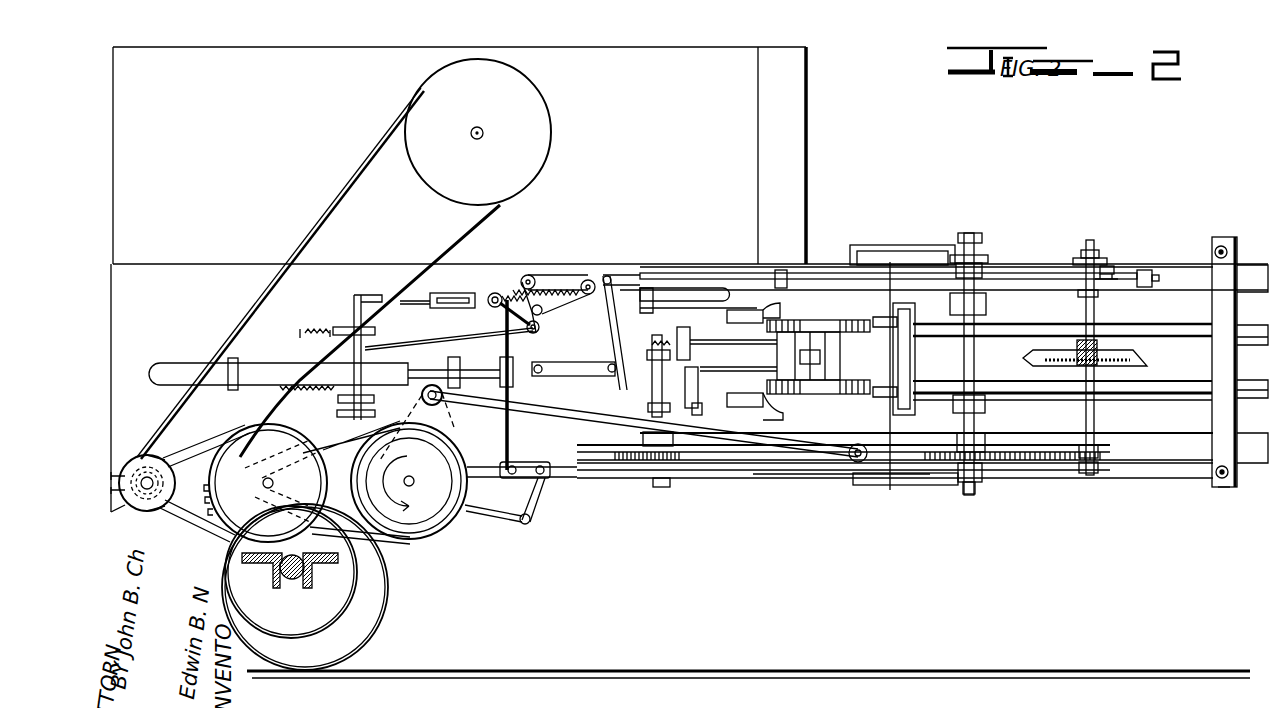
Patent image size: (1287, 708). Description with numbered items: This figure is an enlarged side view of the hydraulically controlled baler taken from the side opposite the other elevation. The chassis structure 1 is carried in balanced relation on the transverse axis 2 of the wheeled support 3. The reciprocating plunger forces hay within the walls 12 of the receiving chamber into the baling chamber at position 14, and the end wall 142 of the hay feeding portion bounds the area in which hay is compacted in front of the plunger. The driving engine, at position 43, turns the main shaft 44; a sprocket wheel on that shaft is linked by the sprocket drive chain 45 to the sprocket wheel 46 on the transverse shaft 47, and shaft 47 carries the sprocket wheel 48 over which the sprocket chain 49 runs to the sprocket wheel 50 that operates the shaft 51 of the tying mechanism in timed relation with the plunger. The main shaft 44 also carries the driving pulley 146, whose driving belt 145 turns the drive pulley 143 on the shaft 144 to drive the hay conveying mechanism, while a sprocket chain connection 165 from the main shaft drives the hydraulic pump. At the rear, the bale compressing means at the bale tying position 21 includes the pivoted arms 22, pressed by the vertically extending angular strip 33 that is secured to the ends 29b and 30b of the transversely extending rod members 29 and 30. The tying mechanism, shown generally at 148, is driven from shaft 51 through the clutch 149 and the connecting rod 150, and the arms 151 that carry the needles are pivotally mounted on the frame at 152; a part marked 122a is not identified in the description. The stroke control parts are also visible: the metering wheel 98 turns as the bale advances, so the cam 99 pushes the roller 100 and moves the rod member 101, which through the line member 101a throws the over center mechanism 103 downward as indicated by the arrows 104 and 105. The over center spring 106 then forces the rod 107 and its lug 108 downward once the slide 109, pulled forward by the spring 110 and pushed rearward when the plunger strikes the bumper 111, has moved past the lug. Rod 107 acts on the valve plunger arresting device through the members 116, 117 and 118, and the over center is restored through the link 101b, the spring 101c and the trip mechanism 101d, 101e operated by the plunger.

The chassis structure 1 is at (329, 568).
The transverse axis 2 is at (292, 584).
The wheeled support 3 is at (361, 628).
The walls 12 is at (1188, 282).
The baling chamber 14 is at (515, 270).
The bale tying position 21 is at (1043, 290).
The arms 22 is at (1190, 340).
The rod member 29 is at (1228, 243).
The end of rod member 29b is at (1216, 245).
The rod member 30 is at (1216, 475).
The end of rod member 30b is at (1223, 479).
The angular strip 33 is at (1223, 377).
The driving engine position 43 is at (148, 300).
The main shaft 44 is at (146, 494).
The sprocket drive chain 45 is at (201, 523).
The sprocket wheel 46 is at (242, 448).
The transverse shaft 47 is at (257, 489).
The sprocket wheel 48 is at (265, 483).
The sprocket chain 49 is at (384, 570).
The sprocket wheel 50 is at (456, 513).
The shaft of the tying mechanism 51 is at (418, 490).
The metering wheel 98 is at (1036, 374).
The cam 99 is at (1091, 277).
The roller 100 is at (1109, 277).
The rod member 101 is at (815, 275).
The line member 101a is at (557, 273).
The link 101b is at (458, 333).
The spring 101c is at (331, 334).
The trip mechanism 101d is at (368, 292).
The trip mechanism 101e is at (447, 296).
The over center mechanism 103 is at (544, 272).
The arrow 104 is at (484, 303).
The arrow 105 is at (503, 450).
The over center spring 106 is at (574, 300).
The rod 107 is at (510, 346).
The lug 108 is at (549, 363).
The slide 109 is at (400, 378).
The spring 110 is at (277, 398).
The bumper 111 is at (238, 357).
The member 116 is at (527, 462).
The member 117 is at (534, 506).
The member 118 is at (508, 521).
The lever 122a is at (728, 318).
The end wall of hay conveying chamber 142 is at (809, 167).
The drive pulley 143 is at (526, 106).
The shaft 144 is at (476, 141).
The driving belt 145 is at (228, 335).
The driving pulley 146 is at (172, 468).
The tying mechanism 148 is at (851, 290).
The clutch 149 is at (440, 444).
The connecting rod 150 is at (722, 433).
The arms 151 is at (910, 252).
The pivotal mounting 152 is at (969, 230).
The sprocket chain connection 165 is at (115, 436).